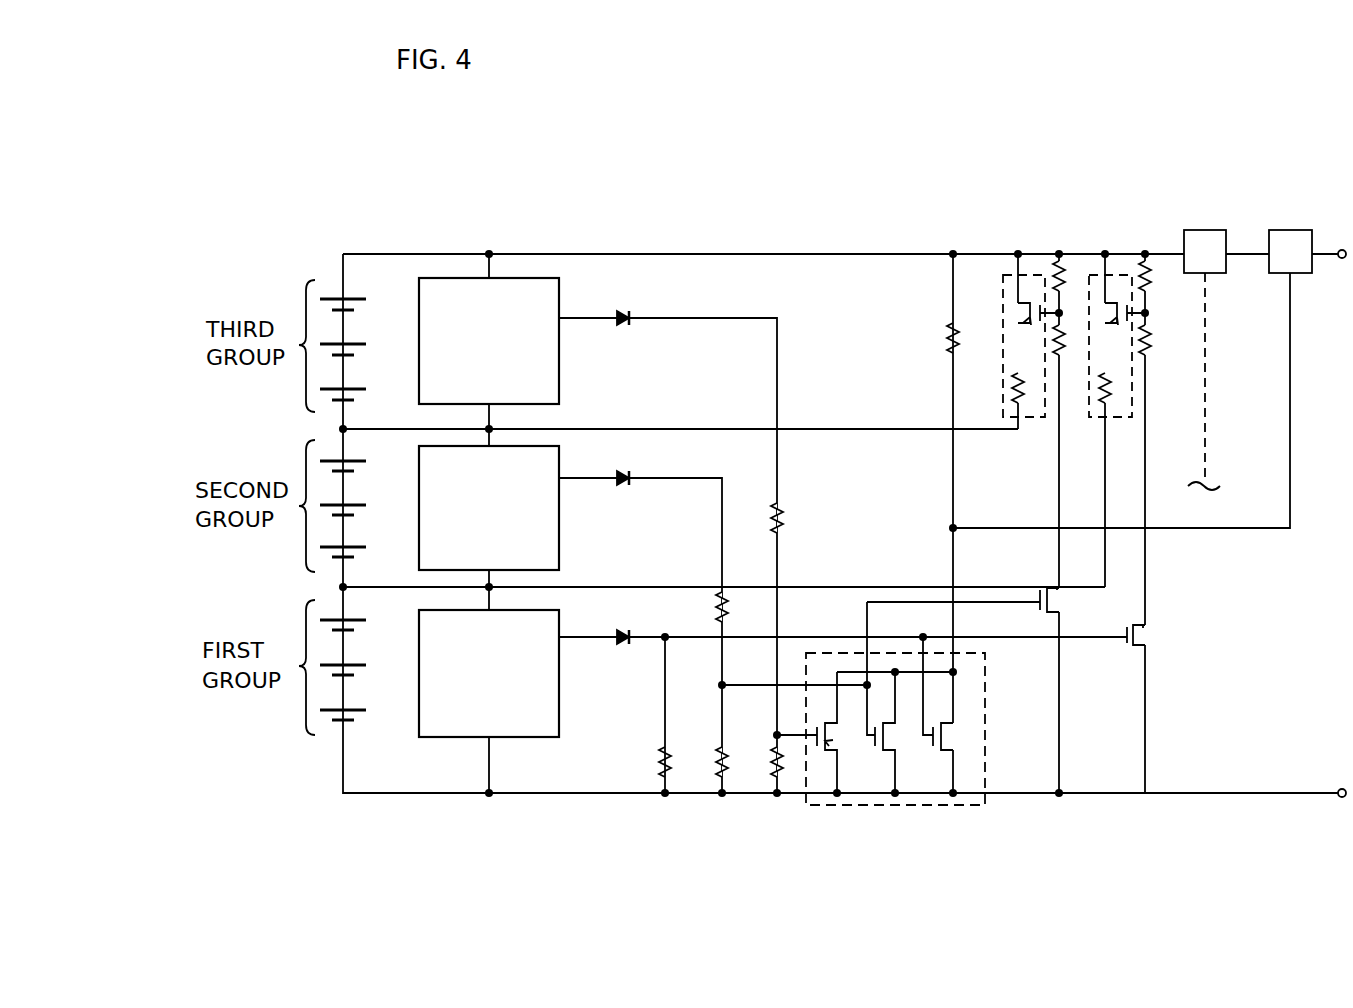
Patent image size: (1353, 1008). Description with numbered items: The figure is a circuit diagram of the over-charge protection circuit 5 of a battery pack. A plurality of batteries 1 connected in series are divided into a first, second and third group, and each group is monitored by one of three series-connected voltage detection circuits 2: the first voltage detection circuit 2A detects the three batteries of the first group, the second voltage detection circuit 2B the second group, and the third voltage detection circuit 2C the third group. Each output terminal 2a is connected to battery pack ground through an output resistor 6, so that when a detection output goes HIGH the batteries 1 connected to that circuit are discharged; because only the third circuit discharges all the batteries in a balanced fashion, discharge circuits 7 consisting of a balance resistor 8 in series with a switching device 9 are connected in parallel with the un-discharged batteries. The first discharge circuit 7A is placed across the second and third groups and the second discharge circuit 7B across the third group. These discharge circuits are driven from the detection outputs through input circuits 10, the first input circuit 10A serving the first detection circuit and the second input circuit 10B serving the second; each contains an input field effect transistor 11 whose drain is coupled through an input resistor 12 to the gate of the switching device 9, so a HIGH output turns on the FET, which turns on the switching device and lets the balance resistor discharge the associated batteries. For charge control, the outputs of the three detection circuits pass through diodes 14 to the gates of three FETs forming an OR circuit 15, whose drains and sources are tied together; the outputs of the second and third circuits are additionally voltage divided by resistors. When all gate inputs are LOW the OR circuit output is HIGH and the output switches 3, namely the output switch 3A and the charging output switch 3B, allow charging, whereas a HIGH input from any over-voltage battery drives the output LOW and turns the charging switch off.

The battery 1 is at (355, 344).
The voltage detection circuit 2 is at (508, 570).
The first voltage detection circuit 2A is at (535, 737).
The second voltage detection circuit 2B is at (559, 530).
The third voltage detection circuit 2C is at (559, 370).
The output terminal 2a is at (559, 320).
The output switch 3 is at (1253, 191).
The output switch 3A is at (1203, 230).
The output switch for charging 3B is at (1290, 217).
The over-charge protection circuit 5 is at (822, 842).
The output resistor 6 is at (777, 510).
The discharge circuit 7 is at (1066, 295).
The first discharge circuit 7A is at (1095, 274).
The second discharge circuit 7B is at (1009, 274).
The balance resistor 8 is at (1018, 388).
The switching device 9 is at (1030, 306).
The input circuit 10 is at (1076, 668).
The first input circuit 10A is at (1118, 658).
The second input circuit 10B is at (1047, 627).
The input field effect transistor 11 is at (1056, 590).
The input resistor 12 is at (1059, 352).
The diode 14 is at (630, 322).
The OR circuit 15 is at (882, 805).